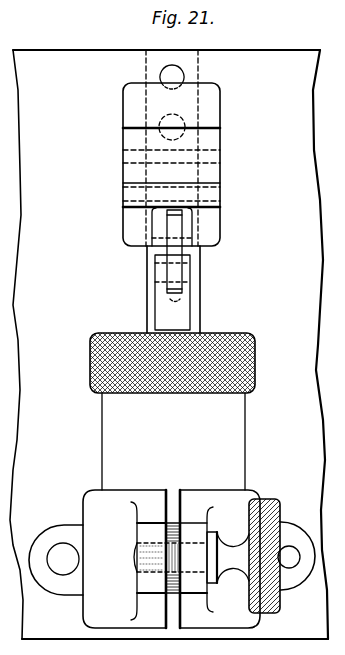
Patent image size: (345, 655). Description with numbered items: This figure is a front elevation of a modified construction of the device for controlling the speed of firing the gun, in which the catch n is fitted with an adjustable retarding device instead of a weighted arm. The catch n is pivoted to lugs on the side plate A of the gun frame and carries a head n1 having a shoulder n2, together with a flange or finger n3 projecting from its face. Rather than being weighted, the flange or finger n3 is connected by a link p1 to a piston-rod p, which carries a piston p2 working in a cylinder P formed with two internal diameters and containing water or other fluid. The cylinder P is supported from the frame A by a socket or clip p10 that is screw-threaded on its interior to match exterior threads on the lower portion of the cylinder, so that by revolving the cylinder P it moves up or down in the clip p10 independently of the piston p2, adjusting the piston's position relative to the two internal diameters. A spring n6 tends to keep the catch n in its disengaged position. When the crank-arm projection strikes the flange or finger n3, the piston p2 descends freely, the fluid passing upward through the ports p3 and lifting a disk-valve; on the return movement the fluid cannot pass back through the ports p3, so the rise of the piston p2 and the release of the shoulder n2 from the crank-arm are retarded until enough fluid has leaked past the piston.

The side plate A is at (169, 344).
The catch n is at (158, 148).
The head n1 is at (172, 87).
The shoulder n2 is at (207, 130).
The flange or finger n3 is at (171, 191).
The spring n6 is at (200, 282).
The piston-rod p is at (172, 292).
The link p1 is at (185, 254).
The cylinder P is at (172, 411).
The piston p2 is at (170, 523).
The ports p3 is at (280, 508).
The socket or clip p10 is at (172, 559).